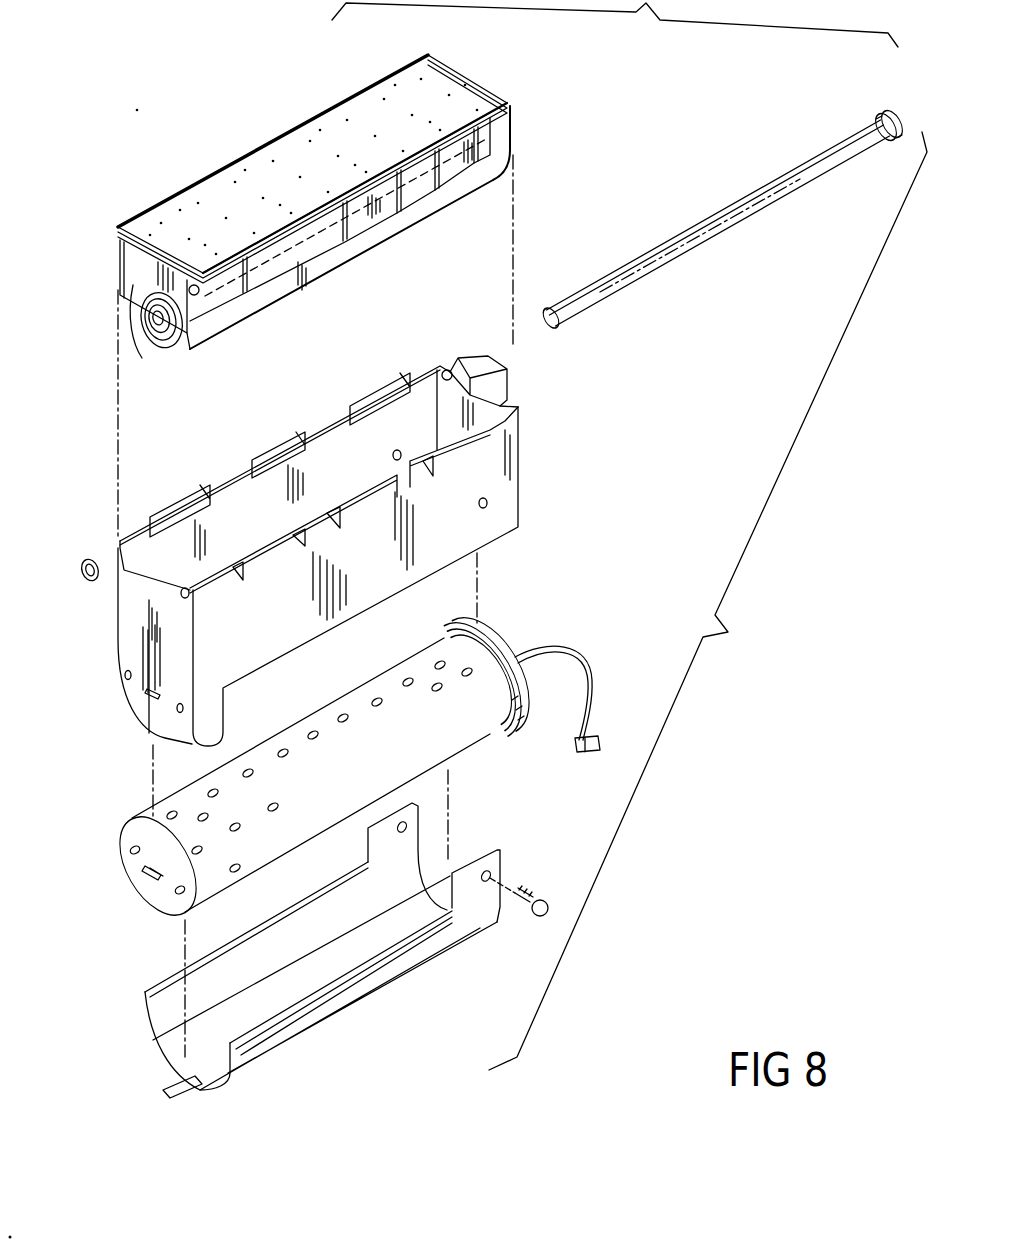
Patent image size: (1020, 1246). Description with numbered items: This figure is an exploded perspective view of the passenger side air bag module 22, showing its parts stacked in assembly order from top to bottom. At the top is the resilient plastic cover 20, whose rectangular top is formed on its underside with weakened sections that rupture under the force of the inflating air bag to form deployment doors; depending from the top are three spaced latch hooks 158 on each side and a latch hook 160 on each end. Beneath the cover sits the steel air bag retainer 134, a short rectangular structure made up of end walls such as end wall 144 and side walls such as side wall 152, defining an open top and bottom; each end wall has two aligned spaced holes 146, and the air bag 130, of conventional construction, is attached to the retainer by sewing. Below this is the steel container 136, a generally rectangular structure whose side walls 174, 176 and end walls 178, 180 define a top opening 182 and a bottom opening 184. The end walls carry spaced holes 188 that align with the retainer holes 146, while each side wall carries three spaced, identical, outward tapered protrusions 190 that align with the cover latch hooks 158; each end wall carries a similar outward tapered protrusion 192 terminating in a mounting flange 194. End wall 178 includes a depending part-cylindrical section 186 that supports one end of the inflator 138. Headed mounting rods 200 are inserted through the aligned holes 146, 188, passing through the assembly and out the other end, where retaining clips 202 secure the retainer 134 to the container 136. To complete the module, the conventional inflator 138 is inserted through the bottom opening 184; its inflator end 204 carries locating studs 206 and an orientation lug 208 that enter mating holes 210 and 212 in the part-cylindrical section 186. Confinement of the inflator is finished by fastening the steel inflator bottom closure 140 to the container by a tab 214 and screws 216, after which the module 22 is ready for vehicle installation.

The cover 20 is at (293, 140).
The passenger side air bag module 22 is at (629, 536).
The air bag 130 is at (190, 345).
The air bag retainer 134 is at (347, 223).
The container 136 is at (348, 520).
The inflator 138 is at (340, 790).
The inflator bottom closure 140 is at (346, 965).
The end wall 144 is at (117, 268).
The holes 146 is at (150, 222).
The side wall 152 is at (548, 140).
The latch hooks 158 is at (433, 188).
The latch hook 160 is at (131, 338).
The side wall 174 is at (430, 372).
The side wall 176 is at (500, 456).
The end wall 178 is at (126, 646).
The end wall 180 is at (500, 414).
The top opening 182 is at (330, 437).
The bottom opening 184 is at (302, 648).
The part-cylindrical section 186 is at (190, 745).
The holes 188 is at (443, 368).
The protrusions 190 is at (285, 462).
The protrusion 192 is at (150, 595).
The mounting flange 194 is at (478, 362).
The mounting rods 200 is at (700, 232).
The retaining clips 202 is at (88, 556).
The inflator end 204 is at (160, 905).
The locating studs 206 is at (133, 845).
The orientation lug 208 is at (150, 878).
The holes 210 is at (125, 676).
The hole 212 is at (147, 691).
The tab 214 is at (190, 1086).
The screws 216 is at (528, 920).